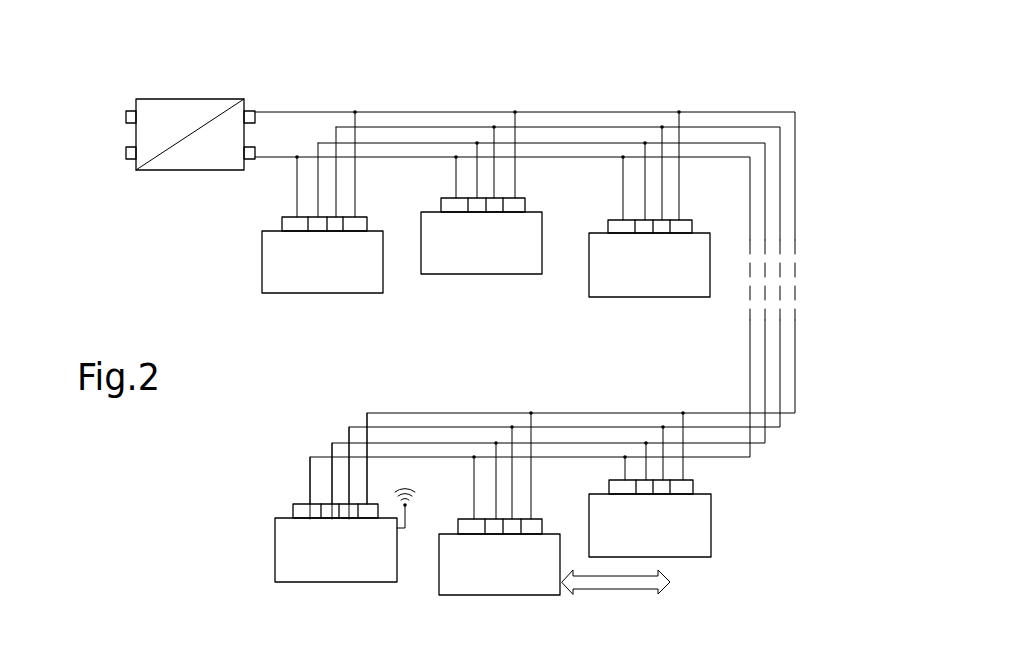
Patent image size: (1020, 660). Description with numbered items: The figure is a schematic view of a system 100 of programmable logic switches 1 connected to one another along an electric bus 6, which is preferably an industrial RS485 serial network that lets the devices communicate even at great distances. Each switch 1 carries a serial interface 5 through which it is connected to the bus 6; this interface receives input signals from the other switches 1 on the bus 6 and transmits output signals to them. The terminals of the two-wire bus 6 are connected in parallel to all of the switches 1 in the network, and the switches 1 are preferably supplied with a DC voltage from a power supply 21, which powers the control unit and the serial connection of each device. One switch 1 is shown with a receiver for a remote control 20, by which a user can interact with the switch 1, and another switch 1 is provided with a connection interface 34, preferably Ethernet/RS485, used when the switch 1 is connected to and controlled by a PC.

The system 100 is at (587, 65).
The power supply 21 is at (188, 115).
The electric bus 6 is at (435, 140).
The serial interface 5 is at (494, 205).
The programmable logic switch 1 is at (291, 280).
The remote control 20 is at (409, 515).
The connection interface 34 is at (592, 580).